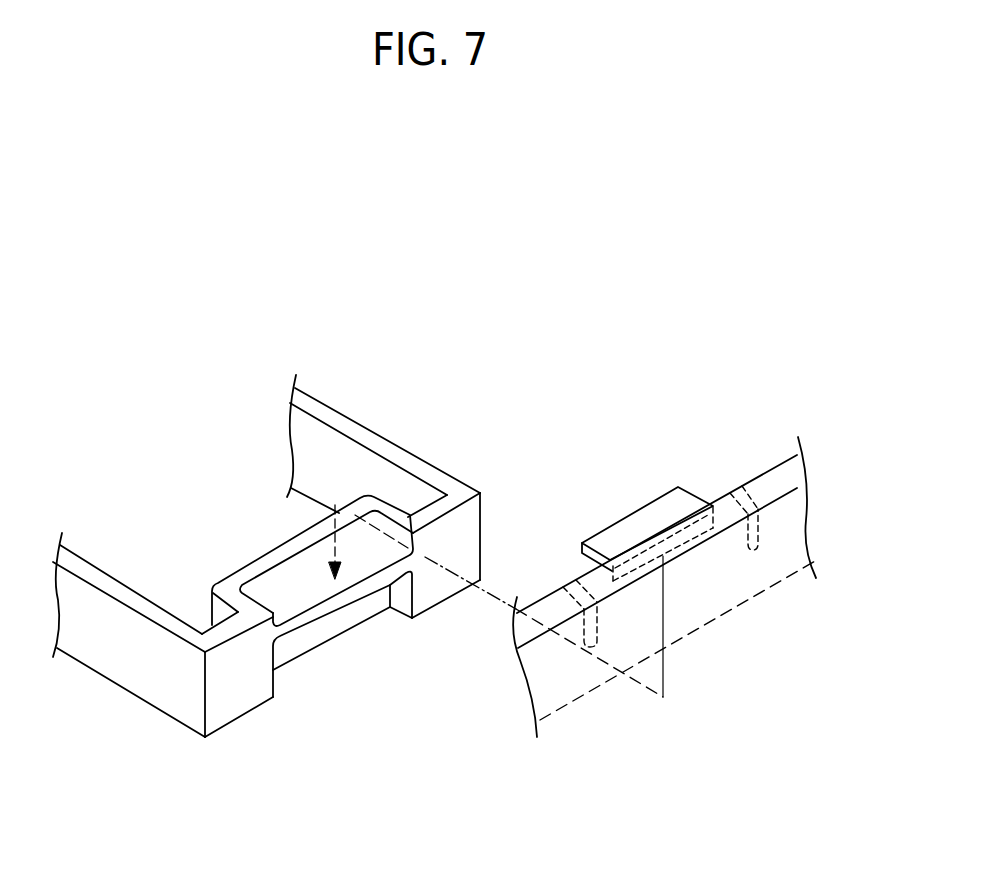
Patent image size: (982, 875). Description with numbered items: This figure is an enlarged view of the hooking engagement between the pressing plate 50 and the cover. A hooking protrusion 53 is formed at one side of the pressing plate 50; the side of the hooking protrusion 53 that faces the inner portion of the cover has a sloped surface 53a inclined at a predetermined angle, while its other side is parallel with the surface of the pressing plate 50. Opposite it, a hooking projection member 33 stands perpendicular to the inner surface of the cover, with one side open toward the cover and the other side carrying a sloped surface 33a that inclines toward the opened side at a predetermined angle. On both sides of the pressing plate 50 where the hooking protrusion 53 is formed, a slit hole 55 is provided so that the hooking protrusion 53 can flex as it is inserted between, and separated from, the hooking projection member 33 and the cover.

The hooking projection member 33 is at (474, 527).
The sloped surface 33a is at (293, 578).
The pressing plate 50 is at (780, 482).
The hooking protrusion 53 is at (627, 527).
The sloped surface 53a is at (582, 560).
The slit hole 55 is at (740, 502).